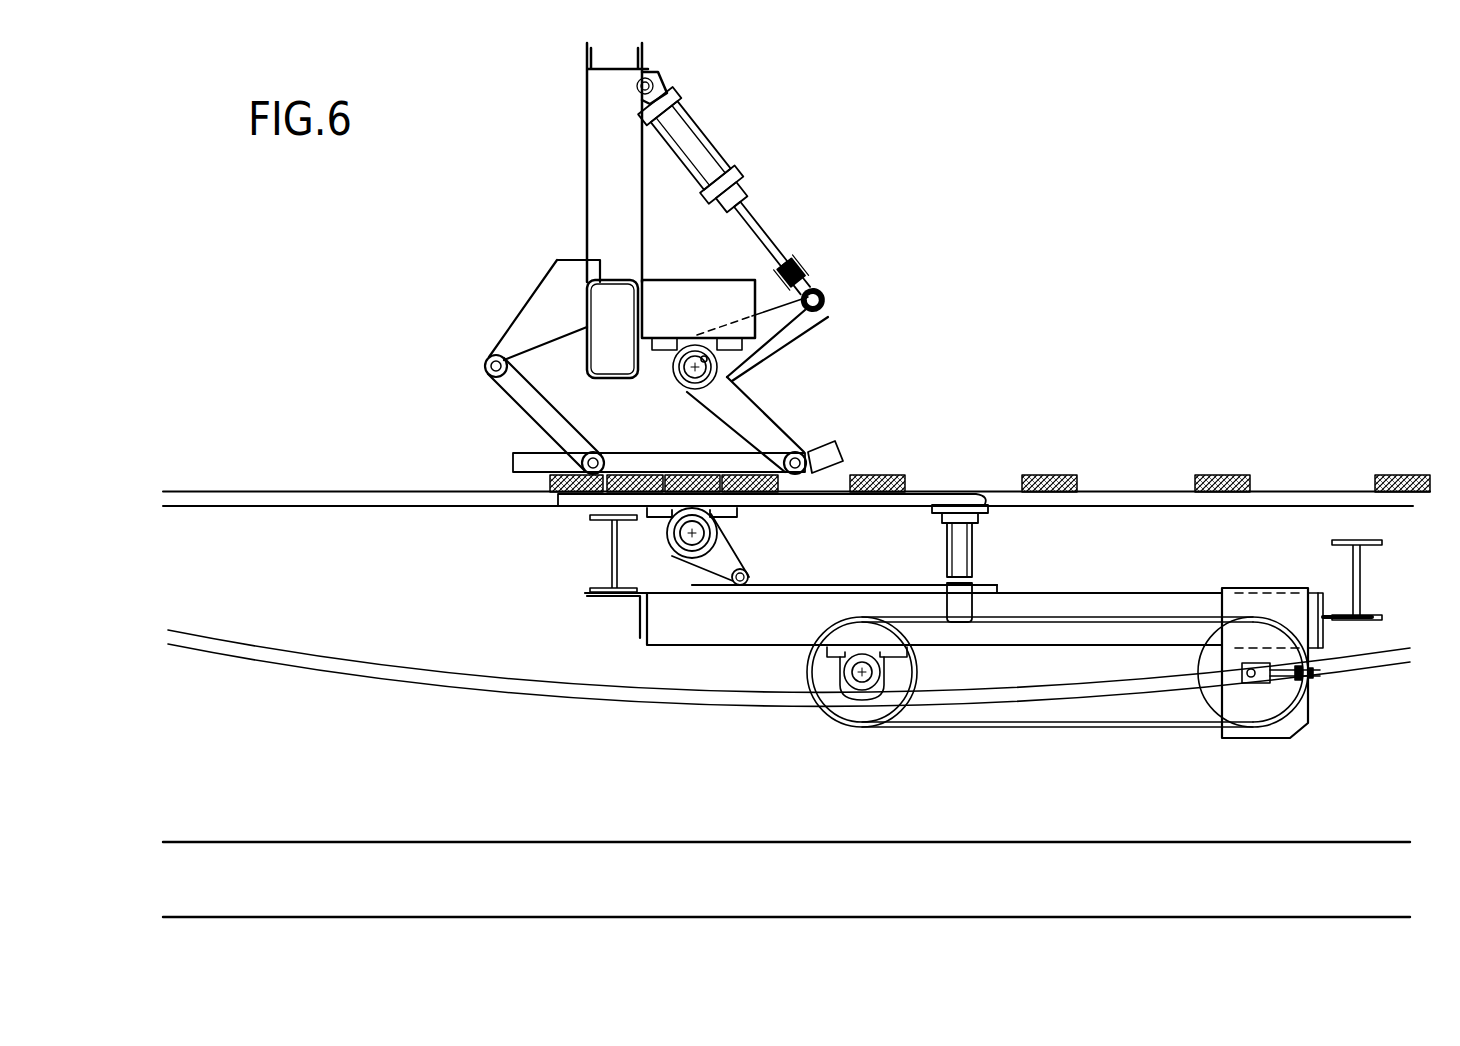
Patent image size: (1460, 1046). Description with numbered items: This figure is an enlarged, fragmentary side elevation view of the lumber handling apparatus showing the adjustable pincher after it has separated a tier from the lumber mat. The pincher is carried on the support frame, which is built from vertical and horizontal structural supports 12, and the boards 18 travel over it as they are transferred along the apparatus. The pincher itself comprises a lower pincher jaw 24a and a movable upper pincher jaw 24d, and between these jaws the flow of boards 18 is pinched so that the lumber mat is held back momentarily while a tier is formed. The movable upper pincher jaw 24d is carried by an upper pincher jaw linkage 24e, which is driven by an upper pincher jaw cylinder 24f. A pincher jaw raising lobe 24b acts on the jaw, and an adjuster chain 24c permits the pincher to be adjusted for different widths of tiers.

The structural supports 12 is at (602, 555).
The boards 18 is at (1222, 476).
The lower pincher jaw 24a is at (547, 482).
The pincher jaw raising lobe 24b is at (725, 567).
The adjuster chain 24c is at (1058, 725).
The movable upper pincher jaw 24d is at (828, 440).
The upper pincher jaw linkage 24e is at (548, 425).
The upper pincher jaw cylinder 24f is at (725, 157).